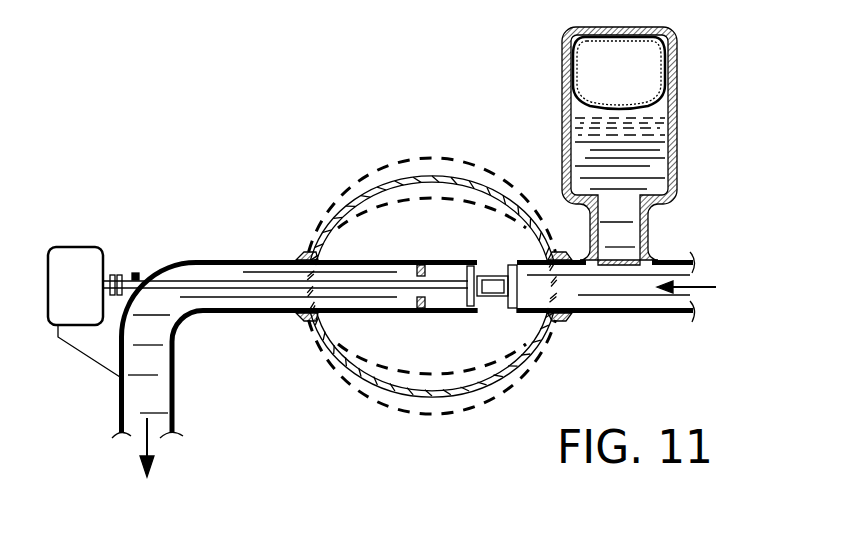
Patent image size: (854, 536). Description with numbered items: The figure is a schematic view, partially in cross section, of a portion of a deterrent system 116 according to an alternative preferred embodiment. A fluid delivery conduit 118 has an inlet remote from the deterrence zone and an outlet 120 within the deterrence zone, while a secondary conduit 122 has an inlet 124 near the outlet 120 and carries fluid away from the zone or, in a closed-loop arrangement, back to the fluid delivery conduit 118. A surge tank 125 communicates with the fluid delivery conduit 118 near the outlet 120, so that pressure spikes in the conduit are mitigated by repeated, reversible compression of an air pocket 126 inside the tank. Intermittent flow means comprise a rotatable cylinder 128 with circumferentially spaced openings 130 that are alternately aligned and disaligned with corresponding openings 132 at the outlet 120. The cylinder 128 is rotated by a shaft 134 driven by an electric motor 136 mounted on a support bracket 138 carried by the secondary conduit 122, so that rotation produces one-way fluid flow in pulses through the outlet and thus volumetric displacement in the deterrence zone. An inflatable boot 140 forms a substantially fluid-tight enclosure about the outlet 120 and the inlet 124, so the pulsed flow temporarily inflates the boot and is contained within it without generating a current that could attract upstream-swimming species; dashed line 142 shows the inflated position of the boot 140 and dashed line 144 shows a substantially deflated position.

The deterrent system 116 is at (269, 240).
The fluid delivery conduit 118 is at (684, 258).
The outlet 120 is at (487, 258).
The secondary conduit 122 is at (232, 313).
The inlet 124 is at (372, 260).
The surge tank 125 is at (678, 98).
The air pocket 126 is at (657, 54).
The rotatable cylinder 128 is at (490, 309).
The circumferentially spaced openings 130 is at (490, 286).
The openings 132 is at (505, 256).
The shaft 134 is at (189, 285).
The electric motor 136 is at (85, 247).
The support bracket 138 is at (84, 346).
The inflatable boot 140 is at (441, 177).
The dashed line 142 is at (387, 165).
The dashed line 144 is at (370, 366).